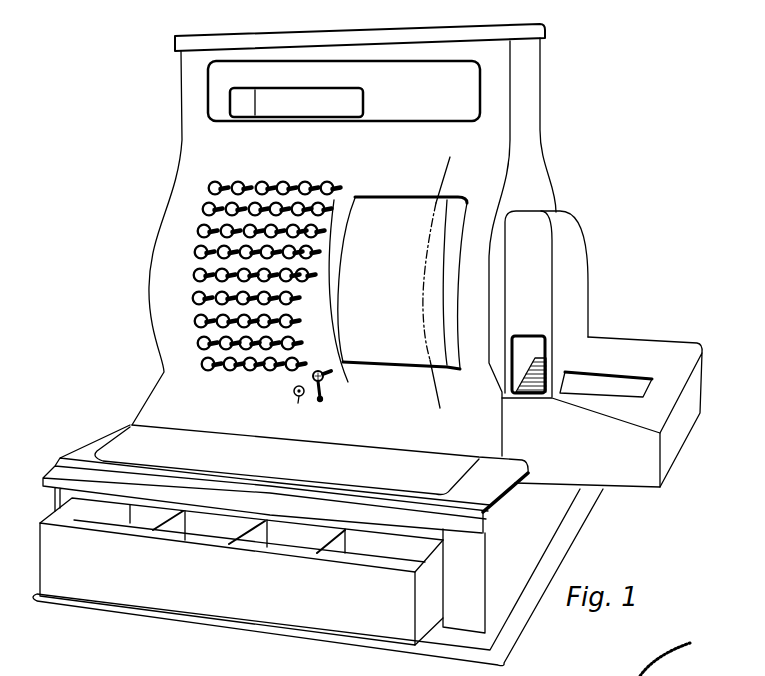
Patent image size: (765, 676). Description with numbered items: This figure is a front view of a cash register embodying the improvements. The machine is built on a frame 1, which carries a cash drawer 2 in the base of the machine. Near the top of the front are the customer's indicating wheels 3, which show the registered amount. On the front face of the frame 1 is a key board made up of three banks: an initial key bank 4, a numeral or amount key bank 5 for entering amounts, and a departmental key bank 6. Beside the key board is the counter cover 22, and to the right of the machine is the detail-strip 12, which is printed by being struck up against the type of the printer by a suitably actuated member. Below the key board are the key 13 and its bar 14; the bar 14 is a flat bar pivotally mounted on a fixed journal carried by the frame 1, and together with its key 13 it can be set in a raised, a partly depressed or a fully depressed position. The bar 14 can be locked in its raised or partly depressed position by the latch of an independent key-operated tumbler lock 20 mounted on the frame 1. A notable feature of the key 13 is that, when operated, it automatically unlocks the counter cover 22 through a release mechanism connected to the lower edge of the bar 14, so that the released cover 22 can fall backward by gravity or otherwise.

The frame 1 is at (541, 171).
The cash drawer 2 is at (241, 571).
The customer's indicating wheels 3 is at (308, 78).
The initial key bank 4 is at (194, 275).
The numeral or amount key bank 5 is at (304, 183).
The departmental key bank 6 is at (336, 181).
The detail-strip 12 is at (540, 394).
The key 13 is at (324, 382).
The bar 14 is at (321, 401).
The key-operated tumbler lock 20 is at (298, 398).
The counter cover 22 is at (402, 283).